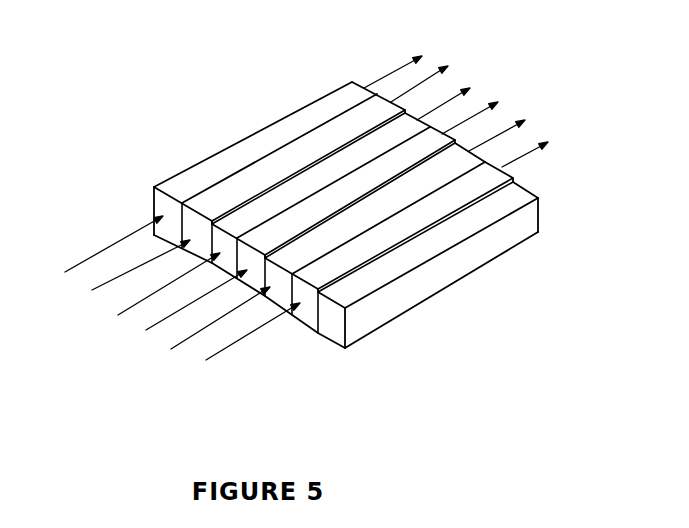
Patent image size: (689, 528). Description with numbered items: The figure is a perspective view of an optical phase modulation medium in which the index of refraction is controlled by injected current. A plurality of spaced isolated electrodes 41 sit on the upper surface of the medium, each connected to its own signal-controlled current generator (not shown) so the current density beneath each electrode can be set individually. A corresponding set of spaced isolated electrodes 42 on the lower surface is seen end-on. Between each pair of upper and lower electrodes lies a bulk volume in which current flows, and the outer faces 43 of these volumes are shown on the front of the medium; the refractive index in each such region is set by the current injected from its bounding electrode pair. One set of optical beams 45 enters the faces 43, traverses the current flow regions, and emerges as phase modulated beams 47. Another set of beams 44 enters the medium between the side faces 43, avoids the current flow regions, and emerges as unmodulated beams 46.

The spaced isolated electrodes on the upper surface 41 is at (346, 215).
The spaced isolated electrodes on the lower surface 42 is at (212, 263).
The outer faces of the bulk volumes 43 is at (246, 259).
The optical beams entering between the side faces 44 is at (156, 288).
The optical beams entering the faces 45 is at (184, 306).
The unmodulated beams 46 is at (457, 93).
The phase modulated beams 47 is at (485, 109).